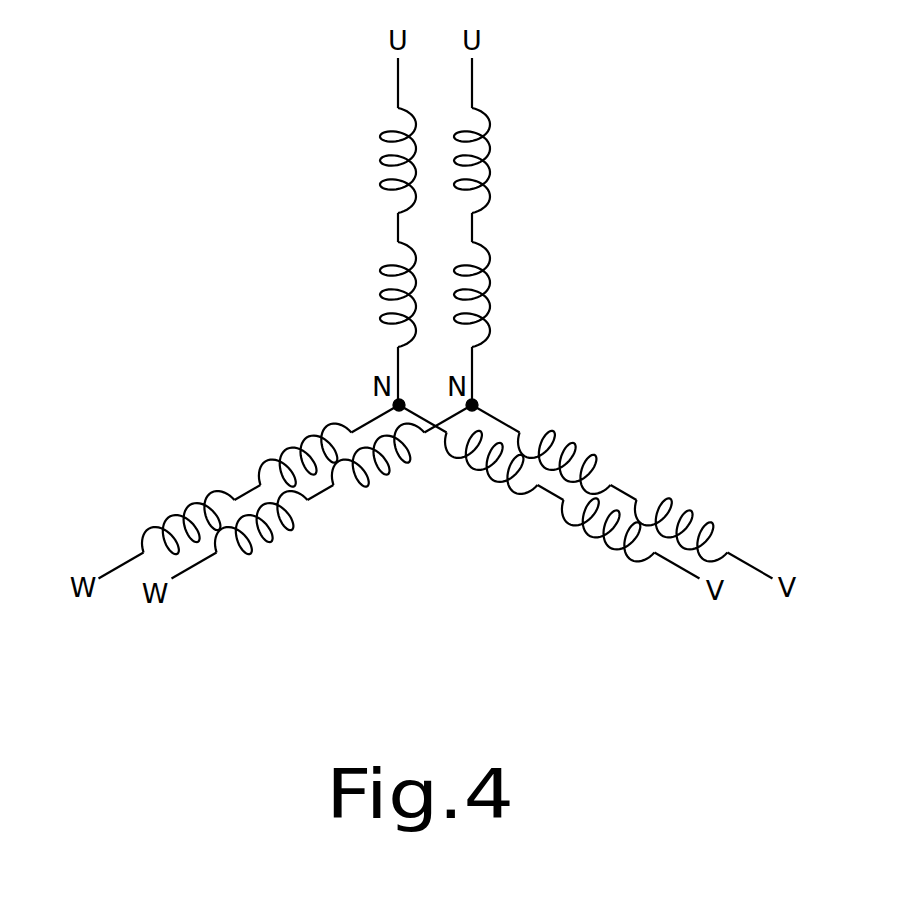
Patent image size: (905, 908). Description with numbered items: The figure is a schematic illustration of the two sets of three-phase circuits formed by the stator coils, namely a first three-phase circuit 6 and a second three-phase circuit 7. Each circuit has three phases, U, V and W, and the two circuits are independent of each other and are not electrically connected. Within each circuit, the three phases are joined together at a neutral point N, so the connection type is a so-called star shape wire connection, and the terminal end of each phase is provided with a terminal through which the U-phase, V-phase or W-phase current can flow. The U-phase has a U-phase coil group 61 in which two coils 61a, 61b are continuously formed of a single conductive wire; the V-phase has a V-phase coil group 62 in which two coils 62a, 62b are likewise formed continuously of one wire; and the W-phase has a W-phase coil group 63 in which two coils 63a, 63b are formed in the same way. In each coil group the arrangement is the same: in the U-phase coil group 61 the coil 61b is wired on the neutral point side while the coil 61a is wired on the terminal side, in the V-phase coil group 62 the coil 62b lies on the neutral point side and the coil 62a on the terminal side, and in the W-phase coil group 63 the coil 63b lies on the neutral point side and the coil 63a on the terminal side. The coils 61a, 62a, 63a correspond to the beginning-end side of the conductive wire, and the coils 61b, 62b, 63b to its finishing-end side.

The first three-phase circuit 6 is at (385, 80).
The second three-phase circuit 7 is at (481, 80).
The U-phase coil group 61 is at (450, 256).
The coil 61a is at (379, 168).
The coil 61b is at (452, 294).
The V-phase coil group 62 is at (586, 521).
The coil 62a is at (657, 535).
The coil 62b is at (577, 448).
The W-phase coil group 63 is at (286, 492).
The coil 63a is at (221, 514).
The coil 63b is at (302, 442).